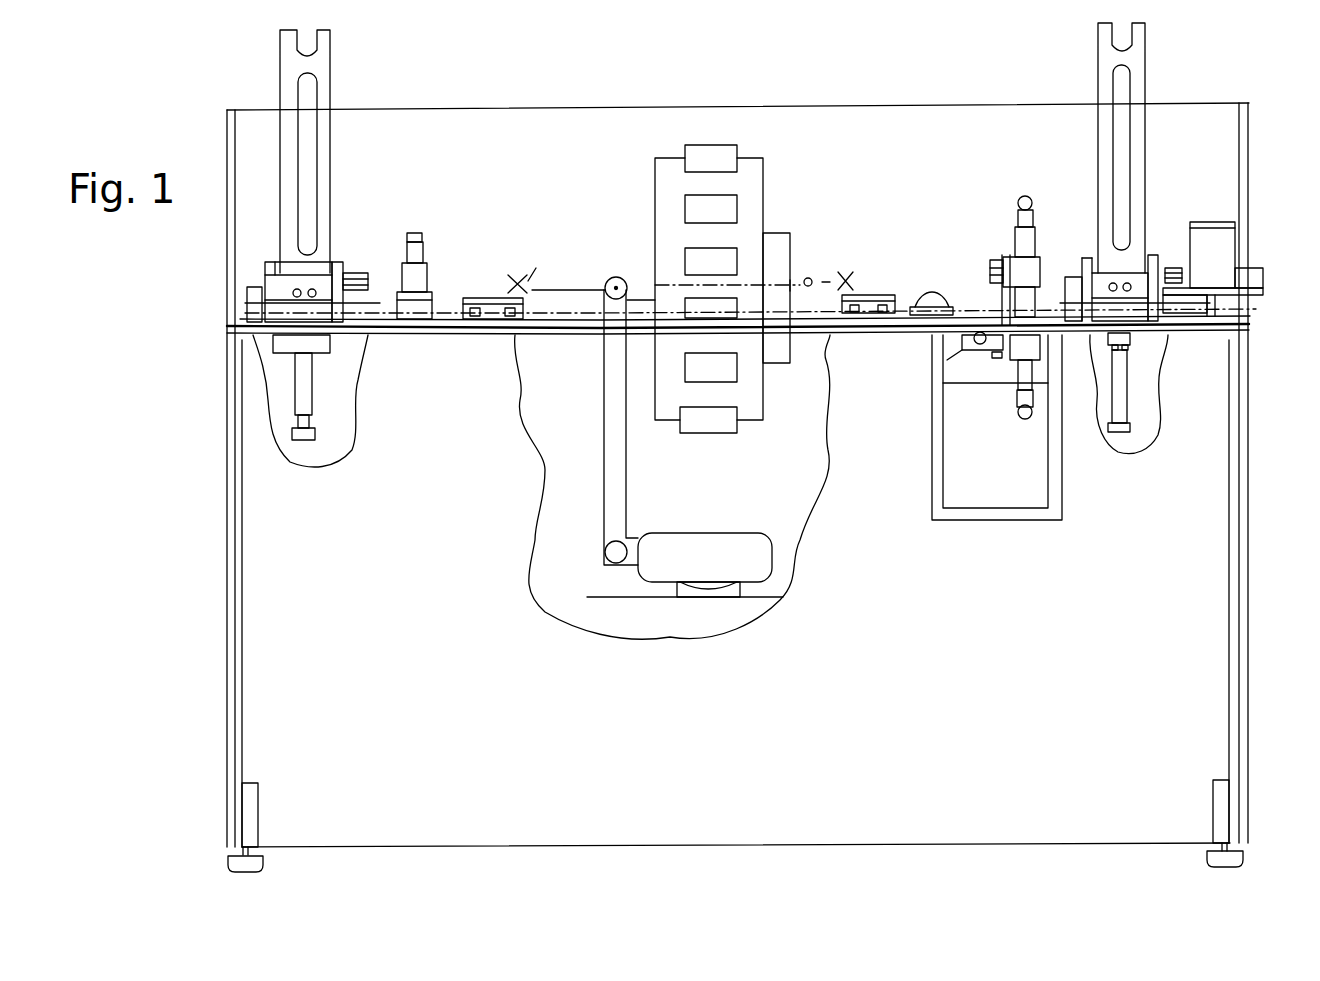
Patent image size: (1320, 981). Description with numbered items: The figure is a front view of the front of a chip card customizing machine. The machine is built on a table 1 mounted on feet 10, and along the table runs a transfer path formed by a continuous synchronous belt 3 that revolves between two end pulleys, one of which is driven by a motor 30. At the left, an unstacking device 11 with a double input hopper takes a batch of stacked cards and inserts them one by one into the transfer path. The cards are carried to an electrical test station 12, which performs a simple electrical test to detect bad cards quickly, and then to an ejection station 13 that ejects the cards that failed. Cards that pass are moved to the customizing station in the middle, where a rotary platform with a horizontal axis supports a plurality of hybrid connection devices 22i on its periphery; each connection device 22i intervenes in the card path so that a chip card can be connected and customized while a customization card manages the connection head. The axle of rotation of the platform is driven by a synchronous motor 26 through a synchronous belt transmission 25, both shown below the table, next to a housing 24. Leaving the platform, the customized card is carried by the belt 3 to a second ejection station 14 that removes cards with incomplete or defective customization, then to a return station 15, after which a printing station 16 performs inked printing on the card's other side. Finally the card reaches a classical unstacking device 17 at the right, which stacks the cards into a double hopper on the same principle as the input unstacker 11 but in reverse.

The table 1 is at (1197, 318).
The continuous synchronous belt 3 is at (968, 307).
The feet 10 is at (233, 592).
The unstacking device 11 is at (300, 392).
The electrical test station 12 is at (418, 228).
The ejection station 13 is at (488, 296).
The ejection station 14 is at (877, 294).
The return station 15 is at (940, 289).
The printing station 16 is at (1027, 194).
The unstacking device 17 is at (1118, 395).
The hybrid connection device 22i is at (737, 208).
The drive housing 24 is at (778, 258).
The synchronous belt transmission 25 is at (613, 462).
The synchronous motor 26 is at (715, 593).
The motor 30 is at (1218, 247).